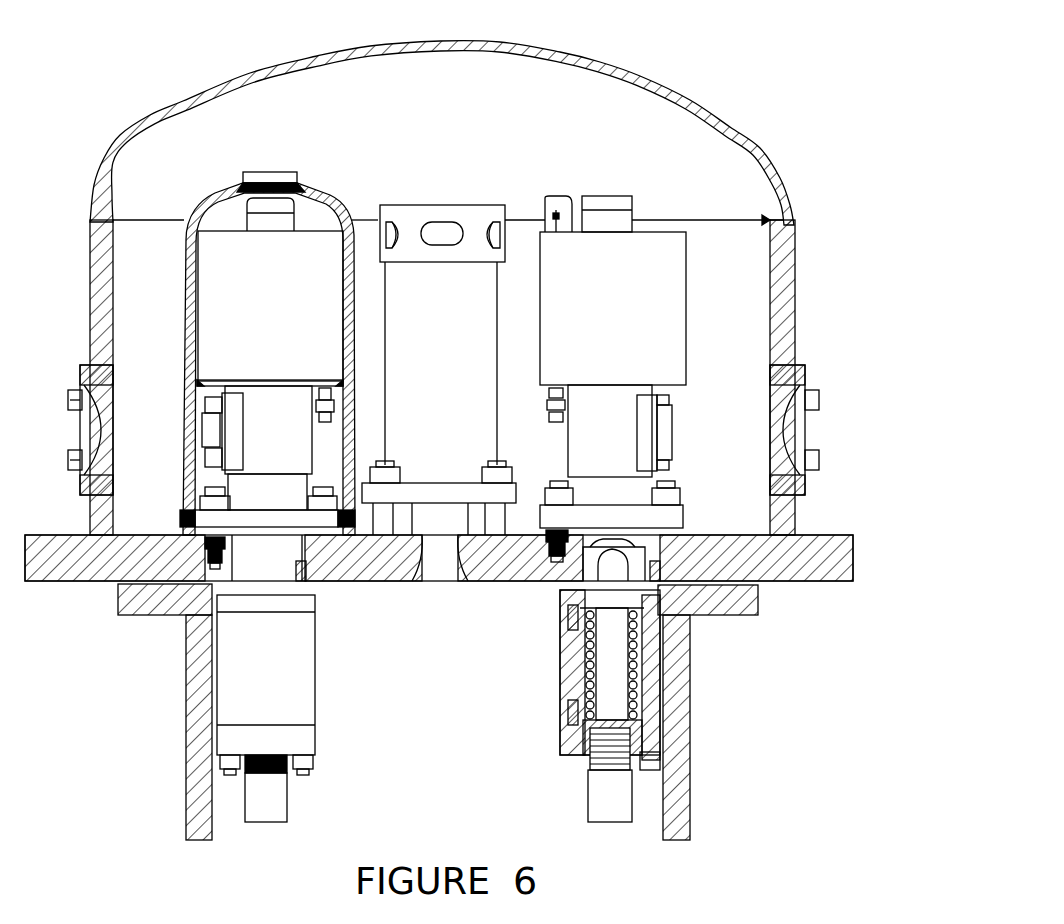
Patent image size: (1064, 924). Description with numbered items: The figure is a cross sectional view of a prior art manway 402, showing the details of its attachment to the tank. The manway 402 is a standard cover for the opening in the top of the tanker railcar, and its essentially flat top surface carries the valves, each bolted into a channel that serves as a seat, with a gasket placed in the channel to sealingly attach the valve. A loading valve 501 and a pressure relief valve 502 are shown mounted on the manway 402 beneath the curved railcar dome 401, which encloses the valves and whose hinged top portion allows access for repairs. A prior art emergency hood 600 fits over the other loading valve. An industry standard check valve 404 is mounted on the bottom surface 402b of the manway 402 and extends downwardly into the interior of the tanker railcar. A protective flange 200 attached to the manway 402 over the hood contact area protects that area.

The railcar dome 401 is at (520, 44).
The protective flange 200 is at (721, 535).
The manway 402 is at (853, 545).
The bottom surface of manway 402b is at (352, 585).
The check valve 404 is at (560, 668).
The emergency hood 600 is at (213, 200).
The pressure relief valve 502 is at (422, 205).
The loading valve 501 is at (668, 297).